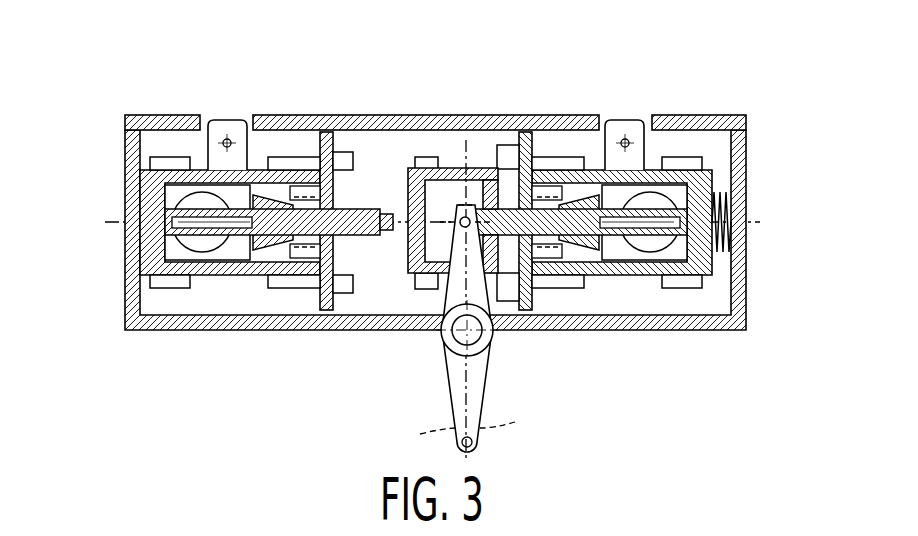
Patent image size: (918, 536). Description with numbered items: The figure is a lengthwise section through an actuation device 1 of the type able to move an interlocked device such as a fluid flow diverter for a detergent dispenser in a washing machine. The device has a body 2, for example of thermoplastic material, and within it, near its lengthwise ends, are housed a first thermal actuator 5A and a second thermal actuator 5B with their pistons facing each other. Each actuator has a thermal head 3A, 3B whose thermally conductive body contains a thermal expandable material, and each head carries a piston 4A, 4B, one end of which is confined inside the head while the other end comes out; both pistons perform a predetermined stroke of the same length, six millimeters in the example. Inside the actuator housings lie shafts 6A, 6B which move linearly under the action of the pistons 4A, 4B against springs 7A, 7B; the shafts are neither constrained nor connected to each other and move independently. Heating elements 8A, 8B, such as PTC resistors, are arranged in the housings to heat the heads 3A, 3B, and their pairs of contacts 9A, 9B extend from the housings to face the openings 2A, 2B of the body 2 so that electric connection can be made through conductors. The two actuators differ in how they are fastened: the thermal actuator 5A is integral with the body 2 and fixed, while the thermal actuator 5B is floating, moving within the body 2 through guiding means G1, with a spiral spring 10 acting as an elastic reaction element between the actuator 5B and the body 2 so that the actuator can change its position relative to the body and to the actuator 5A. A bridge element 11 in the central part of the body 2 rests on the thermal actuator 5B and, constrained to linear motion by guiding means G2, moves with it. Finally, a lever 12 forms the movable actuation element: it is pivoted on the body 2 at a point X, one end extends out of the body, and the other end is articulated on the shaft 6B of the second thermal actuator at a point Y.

The actuation device 1 is at (94, 177).
The body 2 is at (125, 332).
The opening 2A is at (250, 118).
The opening 2B is at (655, 120).
The thermal head 3A is at (220, 250).
The thermal head 3B is at (660, 252).
The piston 4A is at (262, 260).
The piston 4B is at (598, 262).
The first thermal actuator 5A is at (174, 284).
The second thermal actuator 5B is at (722, 170).
The shaft 6A is at (386, 205).
The shaft 6B is at (540, 240).
The spring 7A is at (322, 300).
The spring 7B is at (527, 132).
The heating element 8A is at (190, 200).
The heating element 8B is at (678, 196).
The contacts 9A is at (230, 123).
The contacts 9B is at (633, 122).
The spiral spring 10 is at (732, 195).
The bridge element 11 is at (412, 168).
The lever 12 is at (477, 392).
The guiding means G1 is at (506, 157).
The guiding means G2 is at (432, 157).
The pivot point X is at (465, 332).
The articulation point Y is at (464, 140).